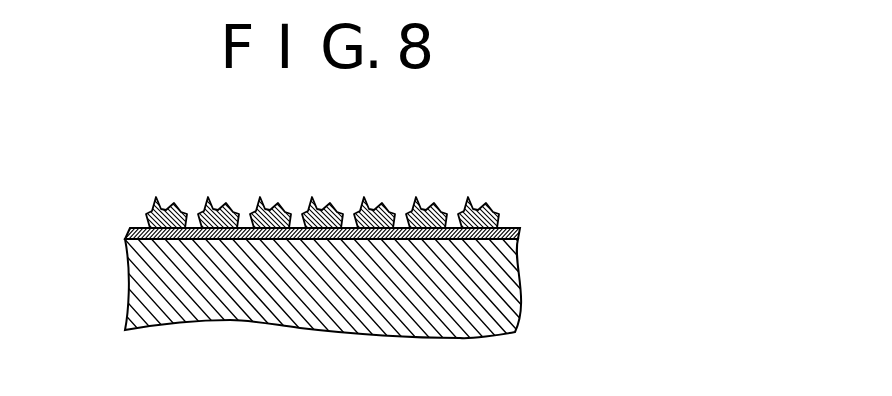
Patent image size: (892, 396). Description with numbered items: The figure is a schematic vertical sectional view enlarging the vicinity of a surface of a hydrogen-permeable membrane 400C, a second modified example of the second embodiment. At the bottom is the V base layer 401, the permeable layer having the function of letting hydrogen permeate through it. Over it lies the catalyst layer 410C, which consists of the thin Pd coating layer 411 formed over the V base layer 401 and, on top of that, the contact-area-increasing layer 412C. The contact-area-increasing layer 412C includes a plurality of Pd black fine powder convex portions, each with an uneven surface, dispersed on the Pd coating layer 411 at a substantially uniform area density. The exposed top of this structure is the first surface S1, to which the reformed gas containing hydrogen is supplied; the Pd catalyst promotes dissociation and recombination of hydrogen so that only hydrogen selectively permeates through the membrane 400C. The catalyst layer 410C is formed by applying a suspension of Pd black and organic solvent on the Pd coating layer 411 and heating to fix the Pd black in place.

The hydrogen-permeable membrane 400C is at (478, 152).
The catalyst layer 410C is at (663, 177).
The contact-area-increasing layer 412C is at (520, 203).
The Pd coating layer 411 is at (517, 231).
The V base layer 401 is at (523, 277).
The first surface S1 is at (150, 192).